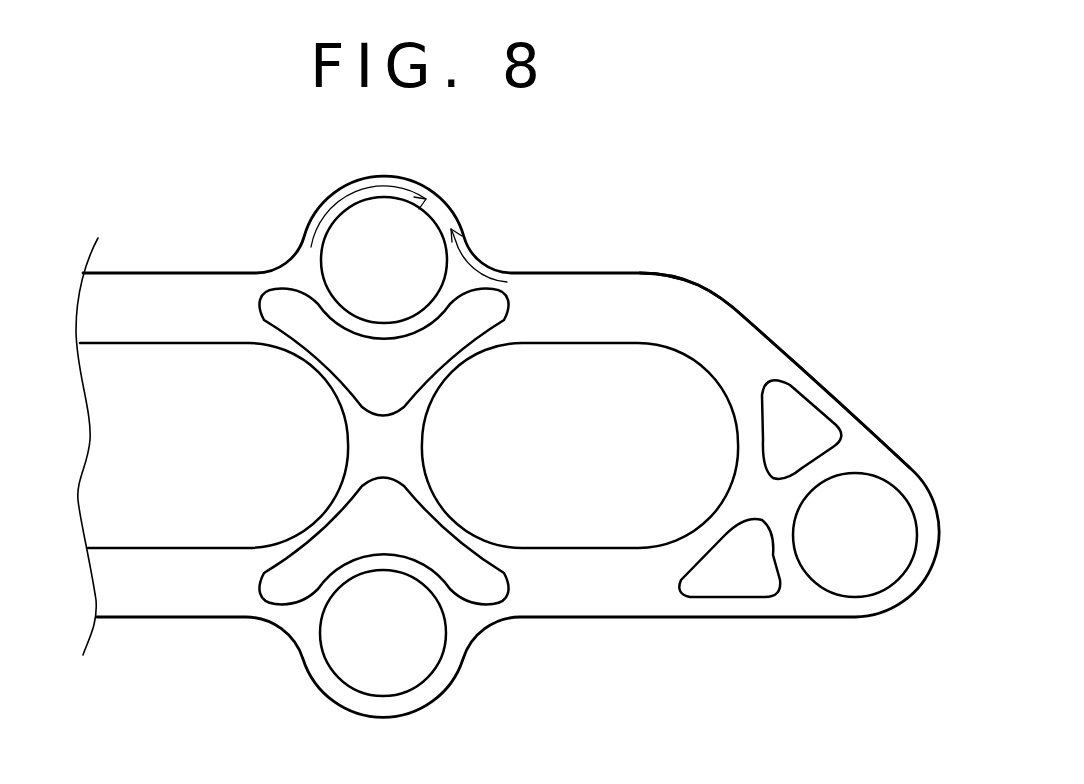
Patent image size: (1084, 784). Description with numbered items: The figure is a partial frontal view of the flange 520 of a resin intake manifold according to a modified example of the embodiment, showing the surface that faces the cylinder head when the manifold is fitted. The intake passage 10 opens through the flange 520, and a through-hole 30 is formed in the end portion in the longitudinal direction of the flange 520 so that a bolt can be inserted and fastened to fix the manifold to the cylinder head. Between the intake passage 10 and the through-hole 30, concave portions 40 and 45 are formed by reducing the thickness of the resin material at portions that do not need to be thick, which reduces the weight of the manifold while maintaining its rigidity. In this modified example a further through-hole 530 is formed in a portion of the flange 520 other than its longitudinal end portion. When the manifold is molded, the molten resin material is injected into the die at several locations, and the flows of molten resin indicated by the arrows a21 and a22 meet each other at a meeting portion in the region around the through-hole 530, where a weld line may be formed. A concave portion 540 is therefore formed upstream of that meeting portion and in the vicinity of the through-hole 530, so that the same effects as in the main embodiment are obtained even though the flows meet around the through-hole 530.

The intake passage 10 is at (615, 347).
The through-hole 30 is at (855, 475).
The concave portion 40 is at (800, 408).
The concave portion 45 is at (724, 590).
The flange 520 is at (698, 328).
The through-hole 530 is at (352, 207).
The concave portion 540 is at (462, 326).
The arrow a21 is at (362, 185).
The arrow a22 is at (473, 255).